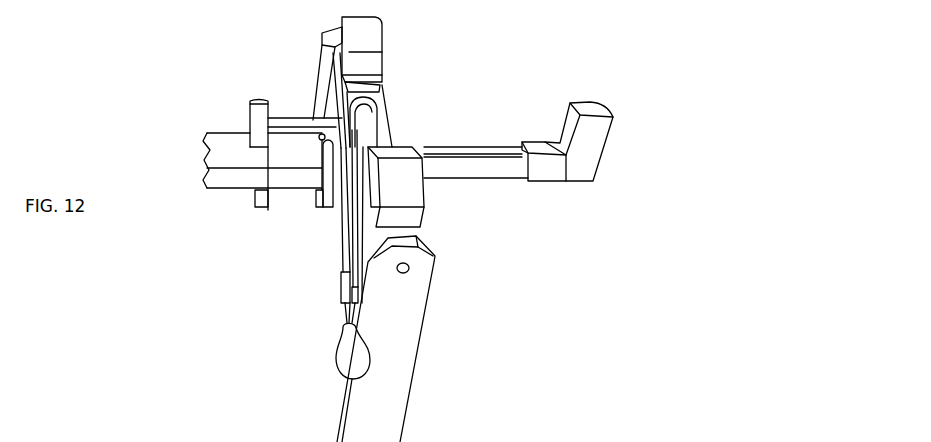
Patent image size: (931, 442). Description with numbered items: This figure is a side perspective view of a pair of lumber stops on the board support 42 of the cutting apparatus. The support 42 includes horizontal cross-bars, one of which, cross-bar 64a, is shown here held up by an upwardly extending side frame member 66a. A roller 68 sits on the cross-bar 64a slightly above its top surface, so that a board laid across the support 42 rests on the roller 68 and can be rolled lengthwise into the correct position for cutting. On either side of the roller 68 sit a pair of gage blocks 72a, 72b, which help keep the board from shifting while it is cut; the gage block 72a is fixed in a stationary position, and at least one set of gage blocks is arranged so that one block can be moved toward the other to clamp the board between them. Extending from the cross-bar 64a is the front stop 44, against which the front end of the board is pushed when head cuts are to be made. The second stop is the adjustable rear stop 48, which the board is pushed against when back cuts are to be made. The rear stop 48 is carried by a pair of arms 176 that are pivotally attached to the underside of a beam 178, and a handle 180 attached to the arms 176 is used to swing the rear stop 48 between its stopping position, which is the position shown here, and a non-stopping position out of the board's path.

The support 42 is at (514, 61).
The front stop 44 is at (596, 143).
The adjustable rear stop 48 is at (251, 99).
The cross-bar 64a is at (392, 138).
The side frame member 66a is at (413, 298).
The roller 68 is at (371, 112).
The gage block 72a is at (413, 181).
The gage block 72b is at (366, 40).
The arms 176 is at (321, 209).
The beam 178 is at (220, 160).
The handle 180 is at (345, 357).